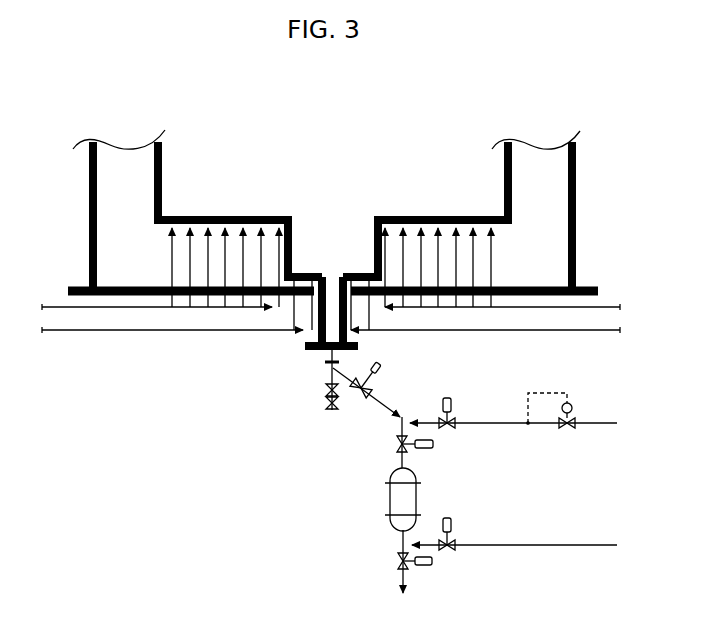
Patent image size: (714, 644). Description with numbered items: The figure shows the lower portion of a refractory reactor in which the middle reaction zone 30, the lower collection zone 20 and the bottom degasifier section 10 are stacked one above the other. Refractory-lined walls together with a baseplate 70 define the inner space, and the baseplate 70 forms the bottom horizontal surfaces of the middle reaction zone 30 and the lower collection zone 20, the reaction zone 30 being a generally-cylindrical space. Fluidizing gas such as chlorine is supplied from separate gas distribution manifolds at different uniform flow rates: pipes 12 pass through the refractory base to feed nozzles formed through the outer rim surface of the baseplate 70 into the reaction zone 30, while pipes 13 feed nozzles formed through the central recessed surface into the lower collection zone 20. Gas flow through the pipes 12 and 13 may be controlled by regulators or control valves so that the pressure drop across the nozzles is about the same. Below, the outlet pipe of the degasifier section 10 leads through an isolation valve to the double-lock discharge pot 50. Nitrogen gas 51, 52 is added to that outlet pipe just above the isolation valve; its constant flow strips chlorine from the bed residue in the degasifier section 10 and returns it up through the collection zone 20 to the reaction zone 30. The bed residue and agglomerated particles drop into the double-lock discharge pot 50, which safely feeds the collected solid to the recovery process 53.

The degasifier section 10 is at (352, 331).
The pipes 12 is at (330, 303).
The pipes 13 is at (330, 337).
The lower collection zone 20 is at (331, 292).
The middle reaction zone 30 is at (333, 210).
The double-lock discharge pot 50 is at (419, 530).
The nitrogen gas 51 is at (530, 413).
The nitrogen gas 52 is at (531, 536).
The recovery process 53 is at (414, 588).
The baseplate 70 is at (297, 272).